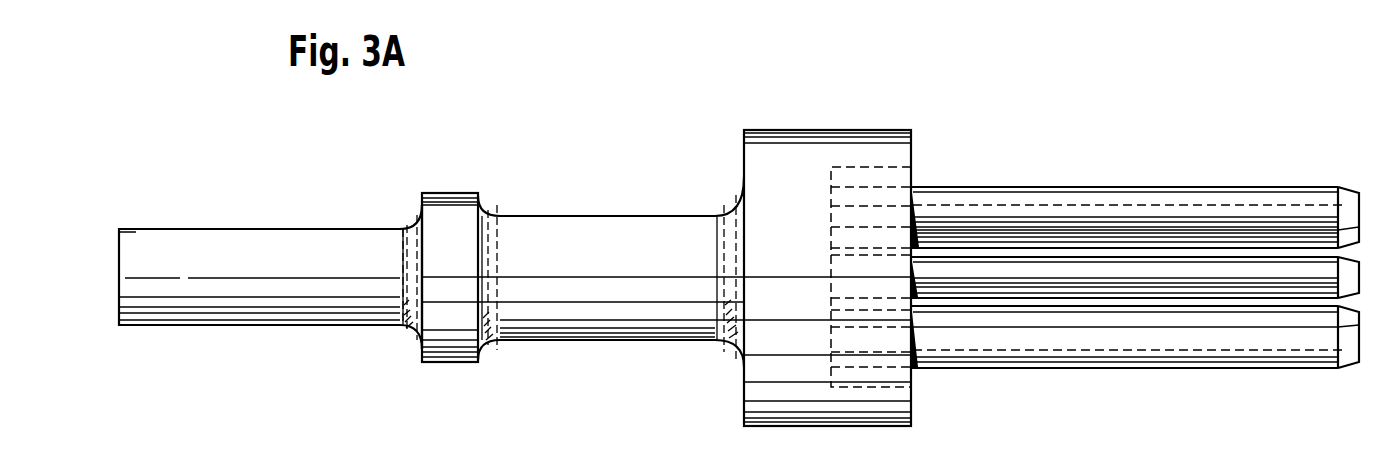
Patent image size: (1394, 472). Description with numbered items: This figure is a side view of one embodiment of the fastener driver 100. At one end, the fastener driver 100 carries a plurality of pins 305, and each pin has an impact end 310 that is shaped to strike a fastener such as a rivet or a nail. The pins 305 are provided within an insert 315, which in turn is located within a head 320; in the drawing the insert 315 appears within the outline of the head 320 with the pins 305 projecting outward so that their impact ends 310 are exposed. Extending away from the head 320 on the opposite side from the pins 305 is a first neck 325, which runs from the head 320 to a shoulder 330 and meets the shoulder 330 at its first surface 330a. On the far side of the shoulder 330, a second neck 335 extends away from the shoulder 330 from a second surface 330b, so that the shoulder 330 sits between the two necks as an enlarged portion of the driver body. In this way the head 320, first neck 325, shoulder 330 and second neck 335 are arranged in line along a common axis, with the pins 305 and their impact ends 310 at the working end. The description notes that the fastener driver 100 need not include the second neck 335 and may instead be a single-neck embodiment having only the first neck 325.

The fastener driver 100 is at (694, 128).
The pins 305 is at (1160, 187).
The impact end 310 is at (1366, 198).
The insert 315 is at (914, 173).
The head 320 is at (821, 130).
The first neck 325 is at (582, 342).
The shoulder 330 is at (449, 192).
The first surface 330a is at (489, 199).
The second surface 330b is at (420, 206).
The second neck 335 is at (266, 228).